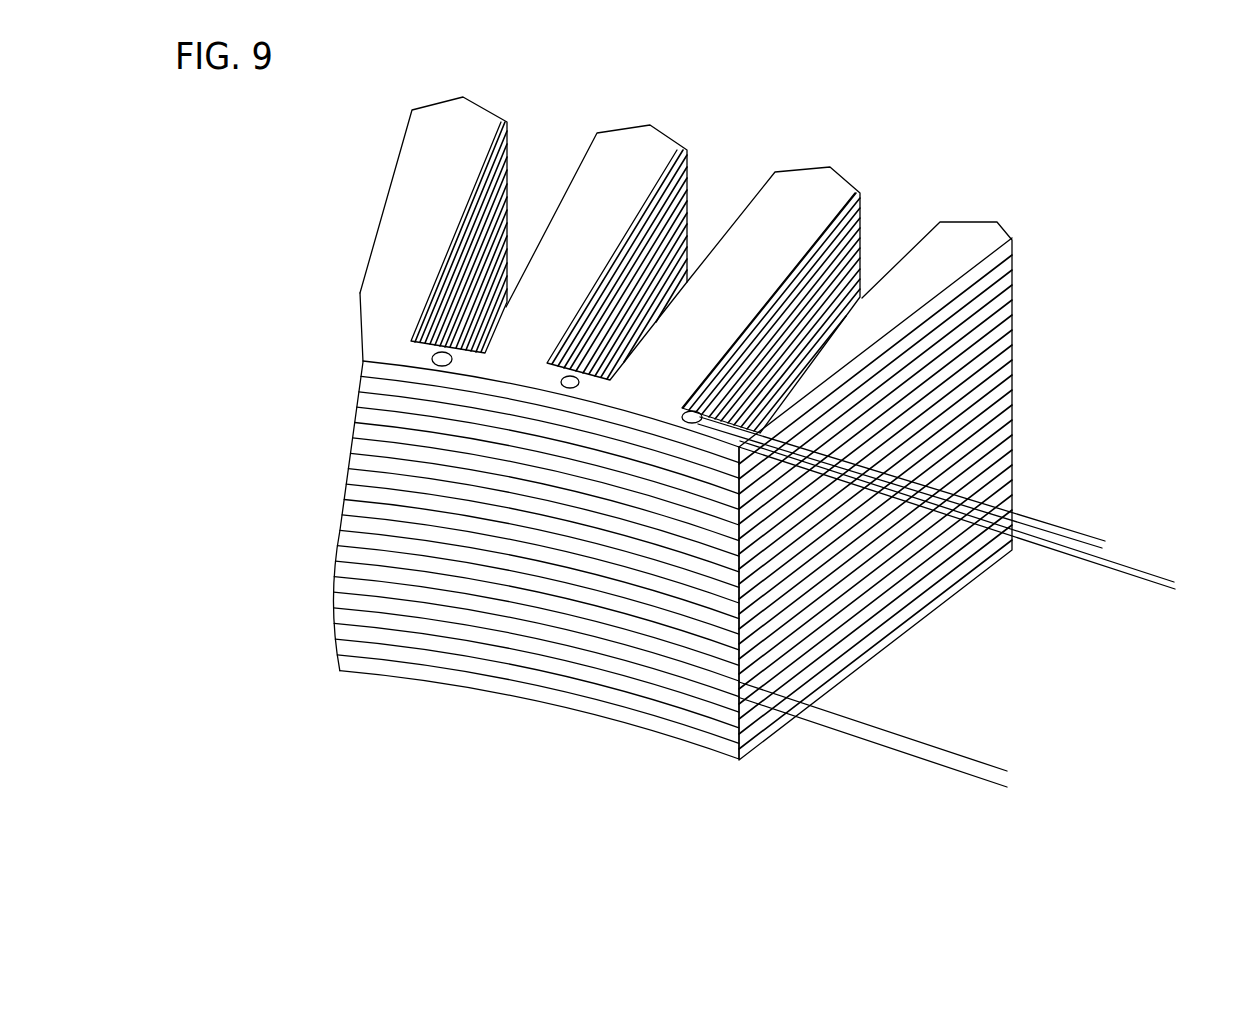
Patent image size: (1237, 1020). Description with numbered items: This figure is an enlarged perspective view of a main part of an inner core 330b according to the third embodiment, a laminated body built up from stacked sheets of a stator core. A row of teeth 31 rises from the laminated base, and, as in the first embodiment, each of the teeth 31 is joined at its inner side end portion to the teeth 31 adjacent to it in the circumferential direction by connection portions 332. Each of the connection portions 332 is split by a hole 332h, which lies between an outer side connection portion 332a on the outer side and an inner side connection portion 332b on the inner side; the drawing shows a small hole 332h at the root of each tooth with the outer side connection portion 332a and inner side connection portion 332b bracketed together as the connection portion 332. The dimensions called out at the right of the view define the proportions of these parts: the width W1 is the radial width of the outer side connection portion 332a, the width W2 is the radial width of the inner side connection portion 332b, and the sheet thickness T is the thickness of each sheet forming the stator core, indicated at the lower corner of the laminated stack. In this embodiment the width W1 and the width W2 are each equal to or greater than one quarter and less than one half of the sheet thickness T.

The teeth 31 is at (715, 283).
The inner core 330b is at (309, 412).
The connection portions 332 is at (464, 533).
The outer side connection portion 332a is at (443, 351).
The inner side connection portion 332b is at (440, 367).
The hole 332h is at (572, 382).
The width of outer side connection portion W1 is at (1007, 592).
The width of inner side connection portion W2 is at (1097, 640).
The sheet thickness T is at (965, 836).